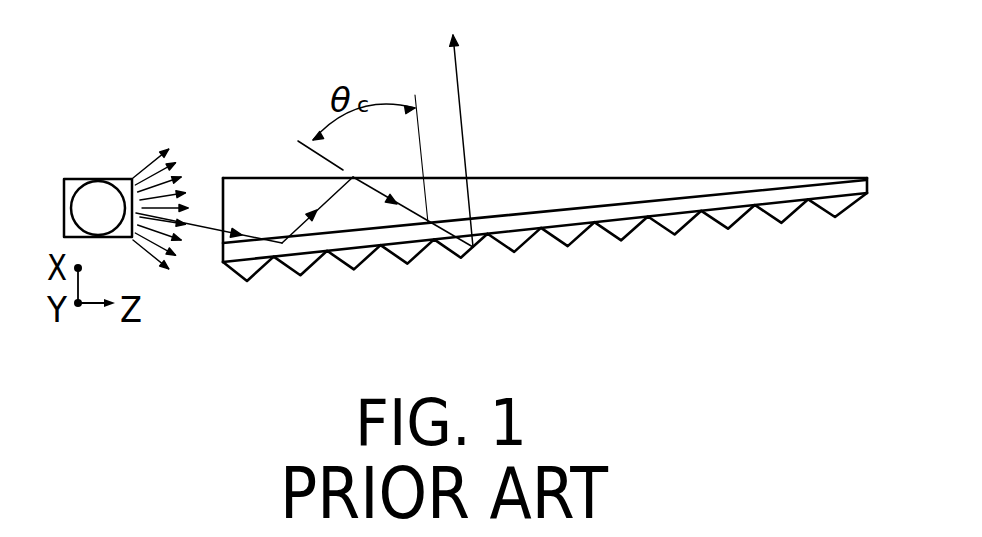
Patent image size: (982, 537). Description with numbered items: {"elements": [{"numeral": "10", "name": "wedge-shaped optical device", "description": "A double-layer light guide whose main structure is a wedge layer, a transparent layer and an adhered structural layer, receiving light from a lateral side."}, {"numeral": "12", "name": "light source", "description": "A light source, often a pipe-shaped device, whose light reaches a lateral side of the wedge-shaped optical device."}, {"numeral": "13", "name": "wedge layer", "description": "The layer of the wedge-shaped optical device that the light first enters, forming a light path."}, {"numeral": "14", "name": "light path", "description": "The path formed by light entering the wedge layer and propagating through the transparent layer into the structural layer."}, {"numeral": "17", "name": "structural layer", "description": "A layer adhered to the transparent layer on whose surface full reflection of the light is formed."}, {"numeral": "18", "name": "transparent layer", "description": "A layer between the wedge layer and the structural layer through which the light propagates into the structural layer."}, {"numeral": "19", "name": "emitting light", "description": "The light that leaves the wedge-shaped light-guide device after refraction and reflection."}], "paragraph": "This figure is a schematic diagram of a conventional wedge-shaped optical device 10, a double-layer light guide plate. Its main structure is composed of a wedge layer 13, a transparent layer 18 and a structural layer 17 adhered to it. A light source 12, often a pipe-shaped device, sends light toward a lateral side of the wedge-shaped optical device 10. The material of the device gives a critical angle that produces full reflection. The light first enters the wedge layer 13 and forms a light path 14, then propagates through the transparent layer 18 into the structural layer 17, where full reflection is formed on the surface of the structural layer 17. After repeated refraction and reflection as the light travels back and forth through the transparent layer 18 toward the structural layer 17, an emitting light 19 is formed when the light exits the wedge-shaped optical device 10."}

The backlight module (prior art) 10 is at (232, 74).
The light source 12 is at (100, 178).
The light guide plate 13 is at (582, 188).
The light ray 14 is at (300, 222).
The prism microstructures 17 is at (632, 236).
The wedge reflecting layer 18 is at (798, 192).
The emitted light 19 is at (462, 102).